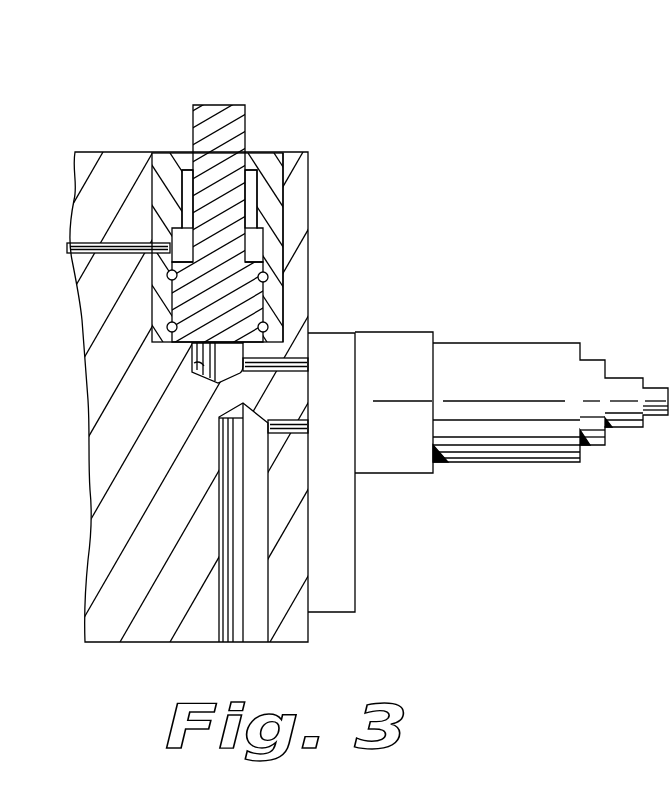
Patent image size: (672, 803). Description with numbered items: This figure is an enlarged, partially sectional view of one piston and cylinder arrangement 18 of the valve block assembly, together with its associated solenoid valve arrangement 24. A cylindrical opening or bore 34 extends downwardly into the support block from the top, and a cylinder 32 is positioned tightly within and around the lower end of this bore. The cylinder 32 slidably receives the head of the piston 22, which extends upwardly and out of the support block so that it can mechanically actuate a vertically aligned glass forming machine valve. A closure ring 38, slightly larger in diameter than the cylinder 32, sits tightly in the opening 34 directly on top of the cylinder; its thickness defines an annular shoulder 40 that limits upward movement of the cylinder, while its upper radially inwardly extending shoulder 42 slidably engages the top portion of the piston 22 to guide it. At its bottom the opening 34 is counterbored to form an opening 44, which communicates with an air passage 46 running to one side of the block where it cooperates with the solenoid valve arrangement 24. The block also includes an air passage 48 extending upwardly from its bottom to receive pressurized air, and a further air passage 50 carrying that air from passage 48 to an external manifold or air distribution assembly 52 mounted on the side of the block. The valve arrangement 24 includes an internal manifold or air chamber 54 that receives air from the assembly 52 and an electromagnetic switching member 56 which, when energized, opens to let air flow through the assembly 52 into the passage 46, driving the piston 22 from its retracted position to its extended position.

The piston and cylinder arrangement 18 is at (218, 225).
The piston 22 is at (223, 105).
The electromagnetic solenoid valve arrangement 24 is at (511, 397).
The cylinder 32 is at (273, 270).
The cylindrical opening or bore 34 is at (284, 200).
The closure ring 38 is at (268, 218).
The annular shoulder 40 is at (266, 277).
The upper radially inwardly extending shoulder 42 is at (251, 166).
The opening 44 is at (208, 383).
The air passage 46 is at (298, 370).
The air passage 48 is at (220, 623).
The air passage 50 is at (291, 425).
The external manifold or air distribution assembly 52 is at (340, 558).
The internal manifold or air chamber 54 is at (507, 430).
The electromagnetic switching member 56 is at (390, 457).